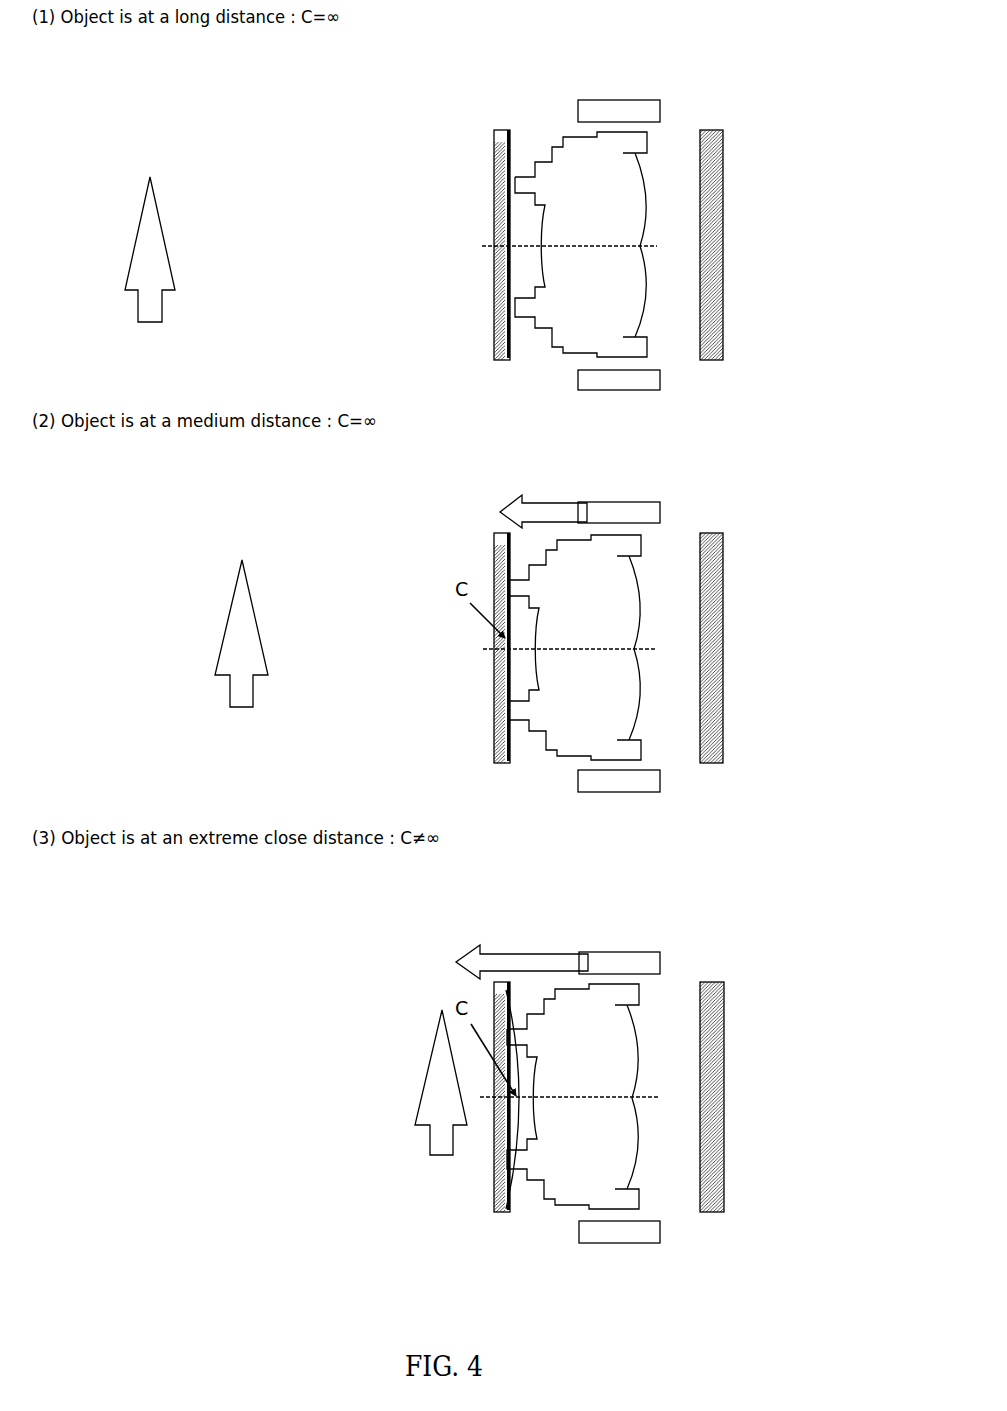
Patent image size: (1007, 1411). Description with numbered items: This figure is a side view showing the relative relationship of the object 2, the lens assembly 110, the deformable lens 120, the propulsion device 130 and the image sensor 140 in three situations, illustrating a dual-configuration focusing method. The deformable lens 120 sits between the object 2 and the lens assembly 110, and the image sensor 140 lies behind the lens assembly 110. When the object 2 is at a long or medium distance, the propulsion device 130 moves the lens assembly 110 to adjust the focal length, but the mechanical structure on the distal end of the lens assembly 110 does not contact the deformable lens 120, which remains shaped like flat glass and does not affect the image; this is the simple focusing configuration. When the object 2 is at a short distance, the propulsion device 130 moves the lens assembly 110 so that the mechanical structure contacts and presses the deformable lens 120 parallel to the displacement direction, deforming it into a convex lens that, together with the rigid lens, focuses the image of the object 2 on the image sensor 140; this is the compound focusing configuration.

The object 2 is at (157, 245).
The lens assembly 110 is at (553, 157).
The deformable lens 120 is at (508, 155).
The propulsion device 130 is at (597, 117).
The image sensor 140 is at (705, 230).